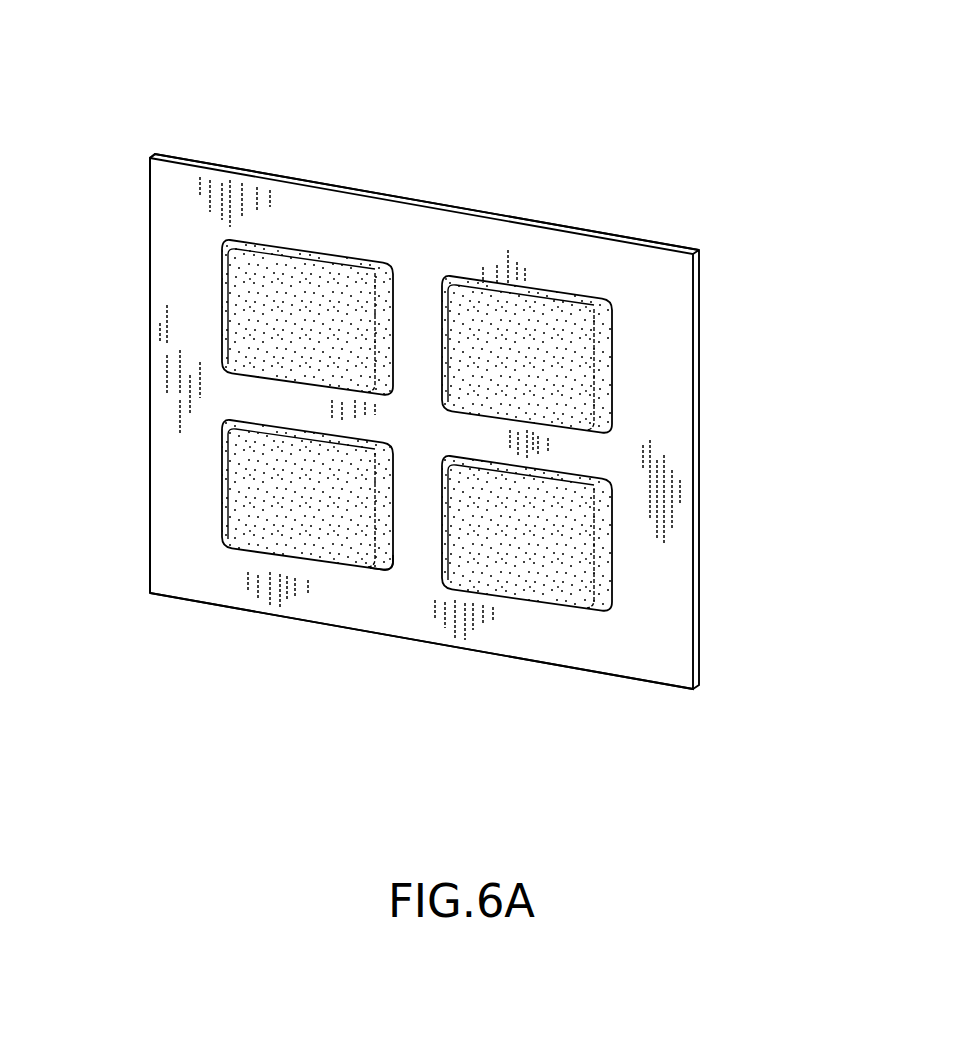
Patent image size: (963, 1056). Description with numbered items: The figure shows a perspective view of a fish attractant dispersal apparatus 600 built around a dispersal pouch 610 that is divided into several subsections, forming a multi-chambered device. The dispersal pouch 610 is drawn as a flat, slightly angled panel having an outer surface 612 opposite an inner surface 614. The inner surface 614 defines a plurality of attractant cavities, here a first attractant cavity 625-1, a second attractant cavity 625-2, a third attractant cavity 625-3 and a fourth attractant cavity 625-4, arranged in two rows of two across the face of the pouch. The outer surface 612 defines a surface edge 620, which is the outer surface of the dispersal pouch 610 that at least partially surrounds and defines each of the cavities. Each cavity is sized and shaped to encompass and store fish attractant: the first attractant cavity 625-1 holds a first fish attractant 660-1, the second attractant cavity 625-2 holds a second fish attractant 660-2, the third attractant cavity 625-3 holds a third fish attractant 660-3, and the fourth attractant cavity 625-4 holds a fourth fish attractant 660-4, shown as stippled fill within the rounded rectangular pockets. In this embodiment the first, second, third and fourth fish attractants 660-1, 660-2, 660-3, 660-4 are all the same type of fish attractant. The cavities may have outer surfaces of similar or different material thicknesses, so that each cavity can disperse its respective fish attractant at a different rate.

The fish attractant dispersal apparatus 600 is at (183, 90).
The dispersal pouch 610 is at (108, 273).
The outer surface 612 is at (473, 638).
The inner surface 614 is at (382, 573).
The surface edge 620 is at (663, 268).
The first attractant cavity 625-1 is at (206, 265).
The second attractant cavity 625-2 is at (622, 342).
The third attractant cavity 625-3 is at (212, 497).
The fourth attractant cavity 625-4 is at (622, 588).
The first fish attractant 660-1 is at (320, 283).
The second fish attractant 660-2 is at (560, 310).
The third fish attractant 660-3 is at (257, 545).
The fourth fish attractant 660-4 is at (552, 590).